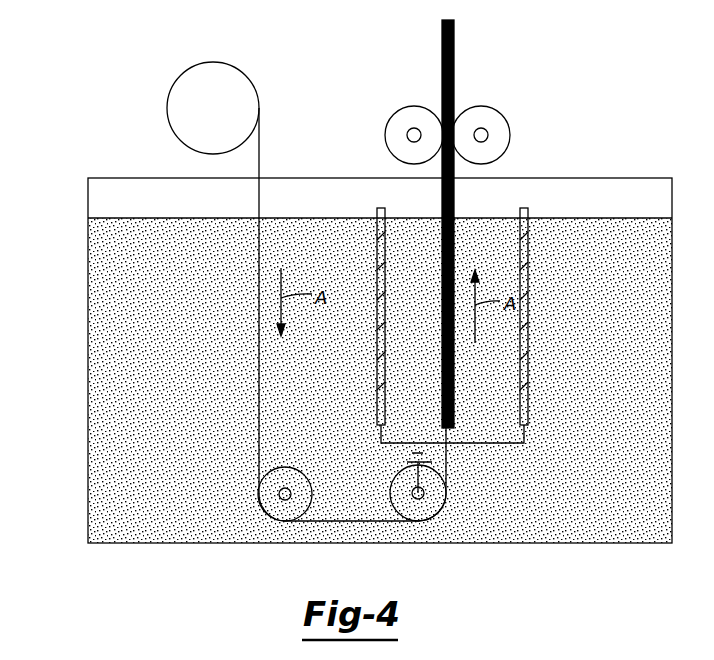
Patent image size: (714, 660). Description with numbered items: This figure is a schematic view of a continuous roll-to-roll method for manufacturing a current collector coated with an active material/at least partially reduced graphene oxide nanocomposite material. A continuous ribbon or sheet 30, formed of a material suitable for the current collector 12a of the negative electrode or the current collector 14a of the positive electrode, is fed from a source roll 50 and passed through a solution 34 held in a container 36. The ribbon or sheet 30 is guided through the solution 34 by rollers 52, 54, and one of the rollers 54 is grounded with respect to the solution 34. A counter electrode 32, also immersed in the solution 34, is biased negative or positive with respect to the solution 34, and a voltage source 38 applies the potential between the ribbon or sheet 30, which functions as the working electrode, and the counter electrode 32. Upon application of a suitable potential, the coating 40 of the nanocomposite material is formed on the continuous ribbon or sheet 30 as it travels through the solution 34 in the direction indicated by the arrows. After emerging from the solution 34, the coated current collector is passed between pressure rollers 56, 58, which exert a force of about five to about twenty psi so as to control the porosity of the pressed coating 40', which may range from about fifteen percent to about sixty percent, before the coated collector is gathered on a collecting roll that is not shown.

The container 36 is at (88, 197).
The solution 34 is at (122, 306).
The source roll 50 is at (167, 110).
The pressure roller 56 is at (385, 135).
The pressure roller 58 is at (510, 135).
The pressed coating 40' is at (488, 119).
The coating 40 is at (478, 309).
The counter electrode 32 is at (387, 220).
The ribbon or sheet 30 is at (277, 314).
The current collector 12a is at (352, 314).
The current collector 14a is at (258, 400).
The roller 52 is at (285, 522).
The roller 54 is at (418, 522).
The voltage source 38 is at (400, 453).